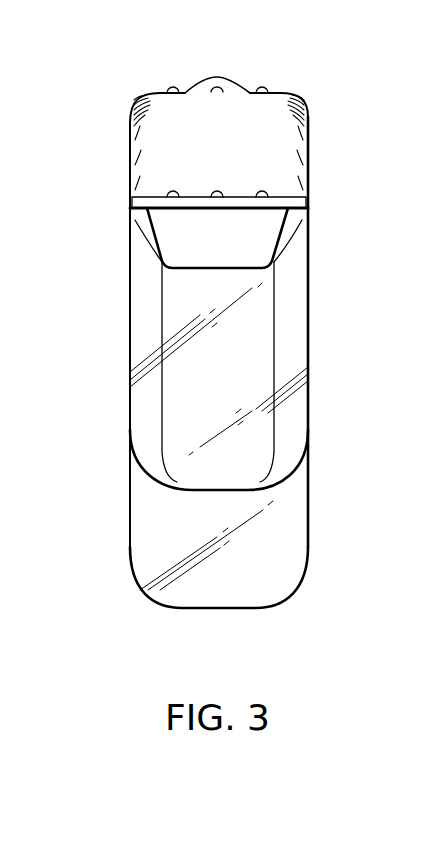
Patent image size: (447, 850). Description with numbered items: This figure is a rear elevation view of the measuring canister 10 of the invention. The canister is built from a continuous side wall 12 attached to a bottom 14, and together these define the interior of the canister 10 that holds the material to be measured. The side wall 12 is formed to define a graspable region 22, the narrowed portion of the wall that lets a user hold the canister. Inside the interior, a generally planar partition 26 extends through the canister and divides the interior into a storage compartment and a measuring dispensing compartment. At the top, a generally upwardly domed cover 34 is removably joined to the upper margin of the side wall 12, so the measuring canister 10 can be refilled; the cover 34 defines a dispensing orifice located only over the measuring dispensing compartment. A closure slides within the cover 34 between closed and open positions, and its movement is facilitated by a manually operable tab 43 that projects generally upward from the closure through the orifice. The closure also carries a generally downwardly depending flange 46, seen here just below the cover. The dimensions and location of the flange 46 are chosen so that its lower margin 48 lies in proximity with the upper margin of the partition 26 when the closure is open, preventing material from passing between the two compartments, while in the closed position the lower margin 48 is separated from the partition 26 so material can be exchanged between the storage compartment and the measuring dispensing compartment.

The measuring canister 10 is at (121, 328).
The continuous side wall 12 is at (130, 488).
The bottom 14 is at (195, 608).
The graspable region 22 is at (310, 350).
The generally planar partition 26 is at (276, 322).
The generally upwardly domed cover 34 is at (272, 94).
The manually operable tab 43 is at (212, 78).
The flange 46 is at (178, 240).
The lower margin 48 is at (268, 256).